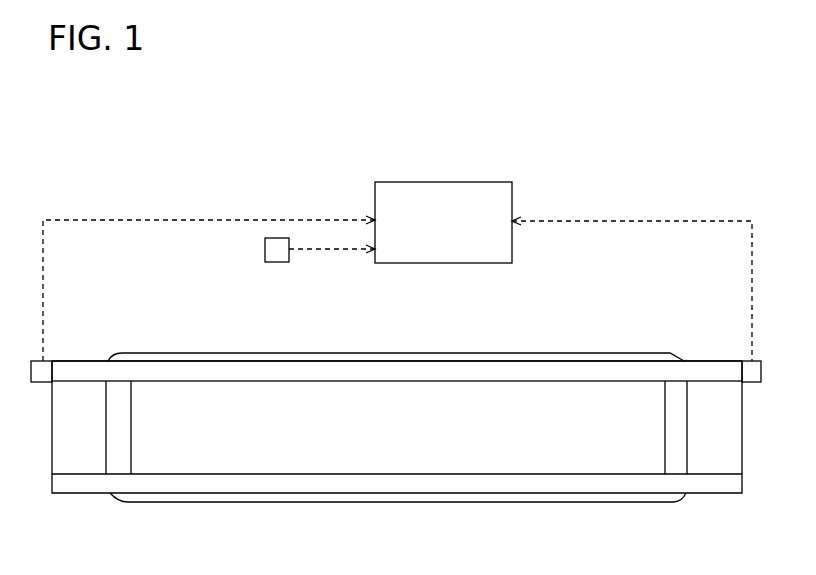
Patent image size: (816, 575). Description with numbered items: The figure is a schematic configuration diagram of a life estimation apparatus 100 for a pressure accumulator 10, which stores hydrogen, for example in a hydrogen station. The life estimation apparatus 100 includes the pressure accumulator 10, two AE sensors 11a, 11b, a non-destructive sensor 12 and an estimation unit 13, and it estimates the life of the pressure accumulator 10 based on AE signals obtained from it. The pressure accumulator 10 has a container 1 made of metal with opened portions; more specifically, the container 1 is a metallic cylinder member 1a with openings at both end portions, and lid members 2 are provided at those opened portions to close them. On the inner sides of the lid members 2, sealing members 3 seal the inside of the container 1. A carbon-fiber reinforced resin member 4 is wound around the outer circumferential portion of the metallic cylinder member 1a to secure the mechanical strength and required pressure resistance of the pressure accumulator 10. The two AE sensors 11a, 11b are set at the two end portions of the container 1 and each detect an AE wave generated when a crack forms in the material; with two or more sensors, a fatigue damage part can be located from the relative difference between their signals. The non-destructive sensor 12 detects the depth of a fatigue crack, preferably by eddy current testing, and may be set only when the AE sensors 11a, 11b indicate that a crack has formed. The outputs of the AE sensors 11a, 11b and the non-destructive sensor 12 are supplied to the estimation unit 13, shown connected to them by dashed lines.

The life estimation apparatus 100 is at (641, 170).
The estimation unit 13 is at (477, 182).
The non-destructive sensor 12 is at (275, 262).
The pressure accumulator 10 is at (635, 325).
The container 1 is at (410, 354).
The metallic cylinder member 1a is at (458, 362).
The AE sensor 11a is at (745, 360).
The AE sensor 11b is at (45, 361).
The lid member 2 is at (78, 440).
The sealing member 3 is at (118, 462).
The carbon-fiber reinforced resin member 4 is at (352, 503).